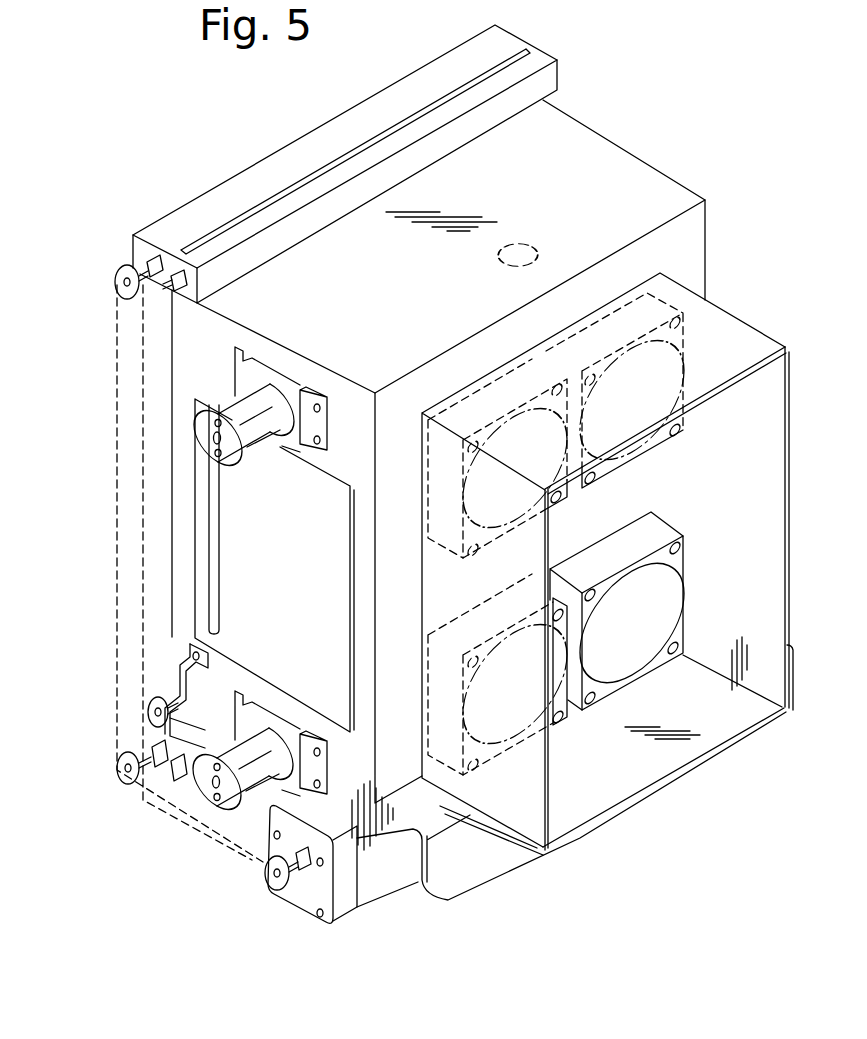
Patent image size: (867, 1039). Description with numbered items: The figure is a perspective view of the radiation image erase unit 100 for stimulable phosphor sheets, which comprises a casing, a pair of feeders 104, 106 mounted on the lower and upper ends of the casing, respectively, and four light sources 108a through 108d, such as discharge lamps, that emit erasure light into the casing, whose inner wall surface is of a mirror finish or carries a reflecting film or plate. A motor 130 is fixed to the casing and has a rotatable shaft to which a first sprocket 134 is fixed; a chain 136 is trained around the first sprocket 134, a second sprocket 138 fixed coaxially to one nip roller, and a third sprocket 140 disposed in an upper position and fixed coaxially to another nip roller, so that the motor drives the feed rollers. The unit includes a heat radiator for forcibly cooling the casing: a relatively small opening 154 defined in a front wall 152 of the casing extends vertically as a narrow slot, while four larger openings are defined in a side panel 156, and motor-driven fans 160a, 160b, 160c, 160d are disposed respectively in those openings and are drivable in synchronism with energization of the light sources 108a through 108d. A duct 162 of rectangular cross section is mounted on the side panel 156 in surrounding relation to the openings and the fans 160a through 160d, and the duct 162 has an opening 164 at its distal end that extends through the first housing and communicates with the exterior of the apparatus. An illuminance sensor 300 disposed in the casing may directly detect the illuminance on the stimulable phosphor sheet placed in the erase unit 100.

The radiation image erase unit 100 is at (652, 158).
The feeder 104 is at (150, 722).
The feeder 106 is at (207, 186).
The light source 108a is at (232, 396).
The light source 108d is at (262, 740).
The motor 130 is at (343, 904).
The first sprocket 134 is at (280, 884).
The chain 136 is at (192, 822).
The second sprocket 138 is at (118, 768).
The third sprocket 140 is at (120, 276).
The front wall 152 is at (255, 512).
The opening 154 is at (217, 527).
The side panel 156 is at (688, 250).
The motor-driven fan 160a is at (498, 395).
The motor-driven fan 160b is at (610, 333).
The motor-driven fan 160c is at (687, 611).
The motor-driven fan 160d is at (565, 722).
The duct 162 is at (746, 313).
The opening 164 is at (791, 650).
The illuminance sensor 300 is at (518, 243).